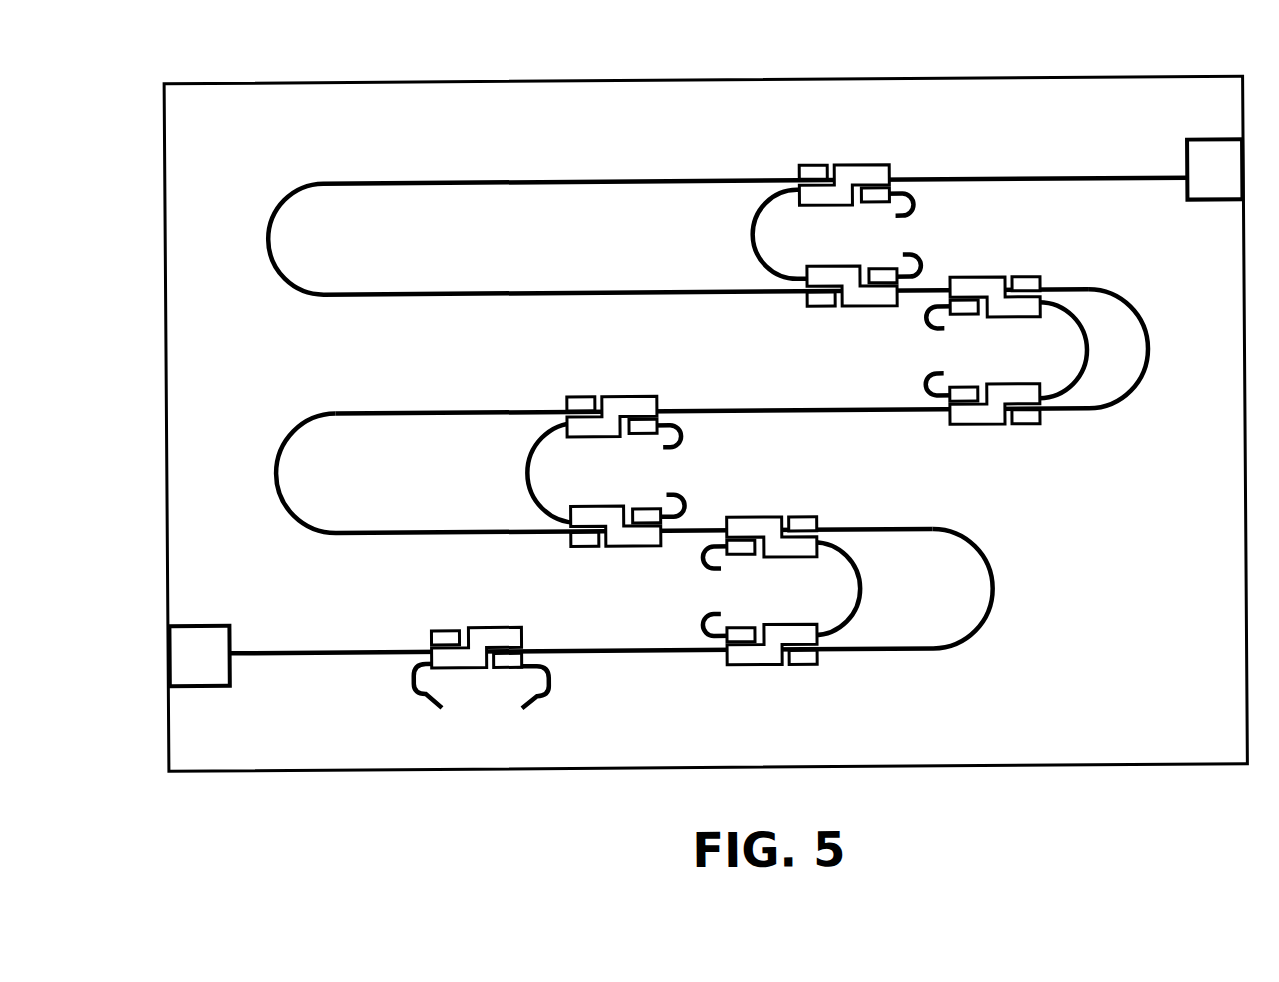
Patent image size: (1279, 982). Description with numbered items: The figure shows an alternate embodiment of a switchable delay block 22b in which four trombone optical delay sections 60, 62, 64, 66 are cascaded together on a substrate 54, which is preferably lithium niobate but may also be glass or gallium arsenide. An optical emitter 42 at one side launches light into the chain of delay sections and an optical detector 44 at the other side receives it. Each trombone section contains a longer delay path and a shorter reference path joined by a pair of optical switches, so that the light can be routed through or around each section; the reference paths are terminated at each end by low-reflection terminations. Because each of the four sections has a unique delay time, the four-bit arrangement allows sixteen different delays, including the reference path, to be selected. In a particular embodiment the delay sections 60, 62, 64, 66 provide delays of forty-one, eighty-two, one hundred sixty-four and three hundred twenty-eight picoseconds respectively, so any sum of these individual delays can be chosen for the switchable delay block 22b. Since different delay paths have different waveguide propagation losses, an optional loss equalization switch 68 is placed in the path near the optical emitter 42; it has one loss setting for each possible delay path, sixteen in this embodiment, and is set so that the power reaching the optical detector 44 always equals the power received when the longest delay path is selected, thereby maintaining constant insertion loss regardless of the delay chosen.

The switchable delay block 22b is at (1058, 78).
The optical emitter 42 is at (230, 636).
The optical detector 44 is at (1188, 154).
The substrate 54 is at (372, 769).
The trombone optical delay section 60 is at (1060, 442).
The trombone optical delay section 62 is at (902, 663).
The trombone optical delay section 64 is at (474, 398).
The trombone optical delay section 66 is at (586, 172).
The loss equalization switch 68 is at (490, 628).